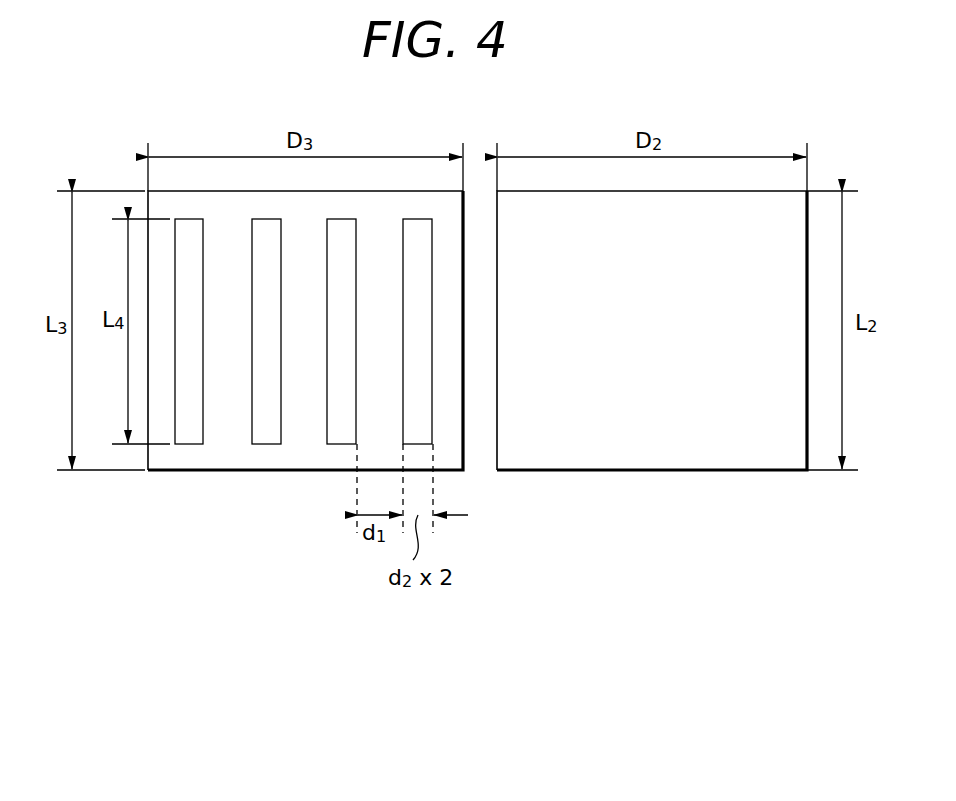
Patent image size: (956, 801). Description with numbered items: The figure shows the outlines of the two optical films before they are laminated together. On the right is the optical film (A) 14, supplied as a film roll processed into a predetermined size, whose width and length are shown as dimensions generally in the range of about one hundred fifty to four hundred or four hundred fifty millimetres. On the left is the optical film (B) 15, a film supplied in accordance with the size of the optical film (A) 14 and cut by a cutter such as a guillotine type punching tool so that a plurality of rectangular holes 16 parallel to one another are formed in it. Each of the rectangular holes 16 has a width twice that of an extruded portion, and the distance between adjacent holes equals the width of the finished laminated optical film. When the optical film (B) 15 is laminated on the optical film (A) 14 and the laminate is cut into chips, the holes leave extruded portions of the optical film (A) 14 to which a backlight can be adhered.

The optical film (A) 14 is at (651, 470).
The optical film (B) 15 is at (268, 470).
The rectangular holes 16 is at (189, 444).